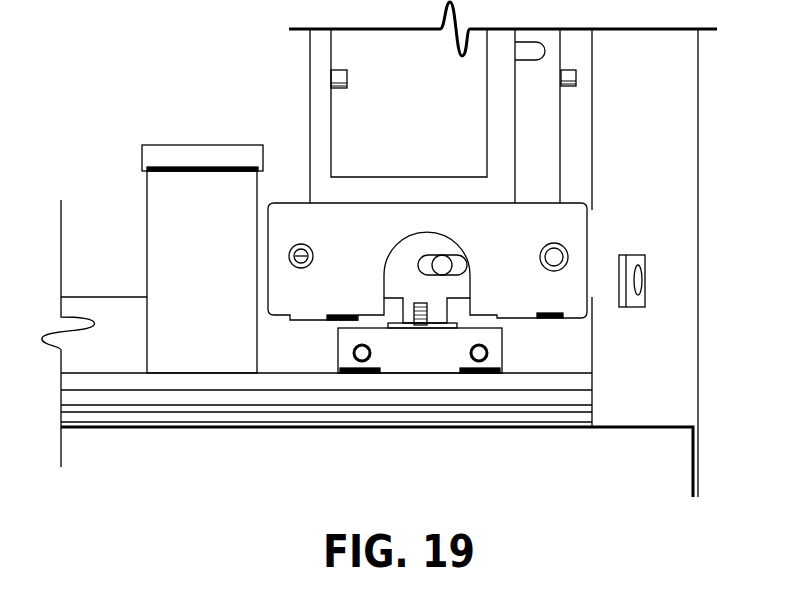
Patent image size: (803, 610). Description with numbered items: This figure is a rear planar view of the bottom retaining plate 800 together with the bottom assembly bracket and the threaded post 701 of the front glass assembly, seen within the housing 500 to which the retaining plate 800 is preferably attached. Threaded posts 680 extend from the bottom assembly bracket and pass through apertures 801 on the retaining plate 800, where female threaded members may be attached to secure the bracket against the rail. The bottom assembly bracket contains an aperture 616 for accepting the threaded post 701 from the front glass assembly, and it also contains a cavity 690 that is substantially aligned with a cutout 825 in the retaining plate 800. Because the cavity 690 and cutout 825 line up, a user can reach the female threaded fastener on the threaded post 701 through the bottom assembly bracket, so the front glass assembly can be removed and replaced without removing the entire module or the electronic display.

The housing 500 is at (683, 113).
The threaded post 680 is at (298, 256).
The cavity 690 is at (399, 272).
The cutout 825 is at (464, 240).
The retaining plate 800 is at (571, 234).
The aperture 801 is at (569, 249).
The threaded post 701 is at (442, 274).
The aperture 616 is at (459, 281).